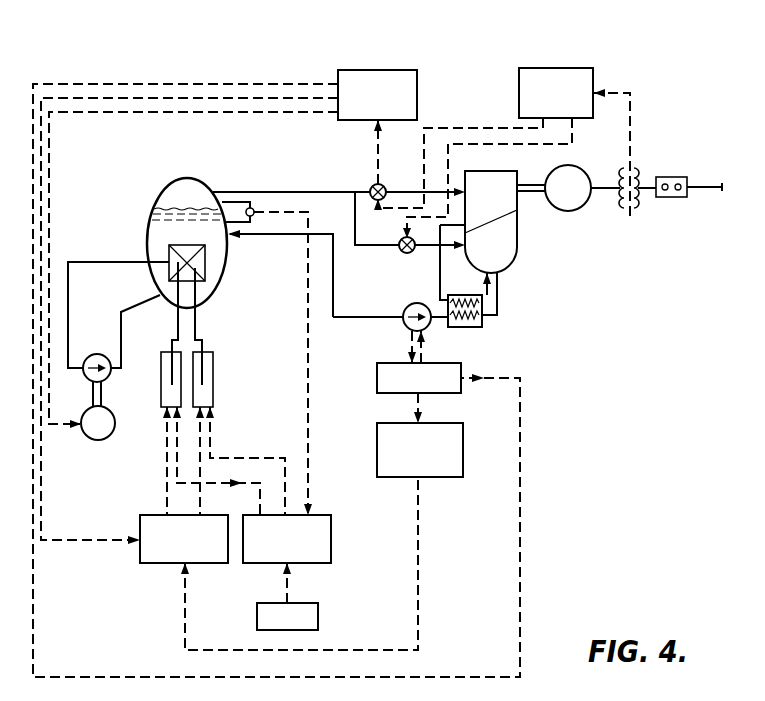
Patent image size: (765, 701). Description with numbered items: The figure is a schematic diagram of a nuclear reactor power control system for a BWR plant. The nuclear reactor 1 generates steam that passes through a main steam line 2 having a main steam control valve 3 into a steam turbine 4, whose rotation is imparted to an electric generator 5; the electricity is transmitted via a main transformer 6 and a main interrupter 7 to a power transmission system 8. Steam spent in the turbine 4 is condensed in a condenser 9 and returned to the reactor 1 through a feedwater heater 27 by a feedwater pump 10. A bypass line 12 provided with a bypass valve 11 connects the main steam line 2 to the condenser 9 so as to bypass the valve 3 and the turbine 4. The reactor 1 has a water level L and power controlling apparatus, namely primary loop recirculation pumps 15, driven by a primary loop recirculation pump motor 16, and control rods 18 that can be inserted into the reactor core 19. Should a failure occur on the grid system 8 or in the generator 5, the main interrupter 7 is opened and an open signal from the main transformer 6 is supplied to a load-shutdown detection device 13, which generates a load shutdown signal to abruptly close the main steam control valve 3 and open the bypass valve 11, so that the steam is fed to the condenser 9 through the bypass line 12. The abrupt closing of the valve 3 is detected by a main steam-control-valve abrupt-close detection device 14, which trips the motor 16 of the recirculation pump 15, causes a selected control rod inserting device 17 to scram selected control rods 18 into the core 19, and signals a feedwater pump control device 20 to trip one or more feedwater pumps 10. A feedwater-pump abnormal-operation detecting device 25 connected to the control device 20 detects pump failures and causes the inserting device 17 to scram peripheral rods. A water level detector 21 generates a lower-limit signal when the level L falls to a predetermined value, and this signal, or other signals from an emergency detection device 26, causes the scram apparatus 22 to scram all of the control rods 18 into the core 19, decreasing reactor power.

The nuclear reactor 1 is at (197, 178).
The water level L is at (168, 208).
The main steam line 2 is at (308, 192).
The main steam control valve 3 is at (384, 186).
The steam turbine 4 is at (519, 176).
The electric generator 5 is at (568, 211).
The main transformer 6 is at (623, 207).
The main interrupter 7 is at (672, 197).
The power transmission system 8 is at (705, 187).
The condenser 9 is at (518, 250).
The feedwater pump 10 is at (405, 327).
The bypass valve 11 is at (409, 254).
The bypass line 12 is at (366, 250).
The load-shutdown detection device 13 is at (553, 68).
The main steam-control-valve abrupt-close detection device 14 is at (376, 70).
The primary loop recirculation pump 15 is at (97, 354).
The primary loop recirculation pump motor 16 is at (98, 440).
The selected control rod inserting device 17 is at (163, 563).
The control rods 18 is at (198, 328).
The reactor core 19 is at (205, 265).
The feedwater pump control device 20 is at (377, 378).
The water level detector 21 is at (252, 206).
The scram apparatus 22 is at (320, 563).
The feedwater-pump abnormal-operation detecting device 25 is at (445, 477).
The emergency detection device 26 is at (318, 618).
The feedwater heater 27 is at (470, 327).